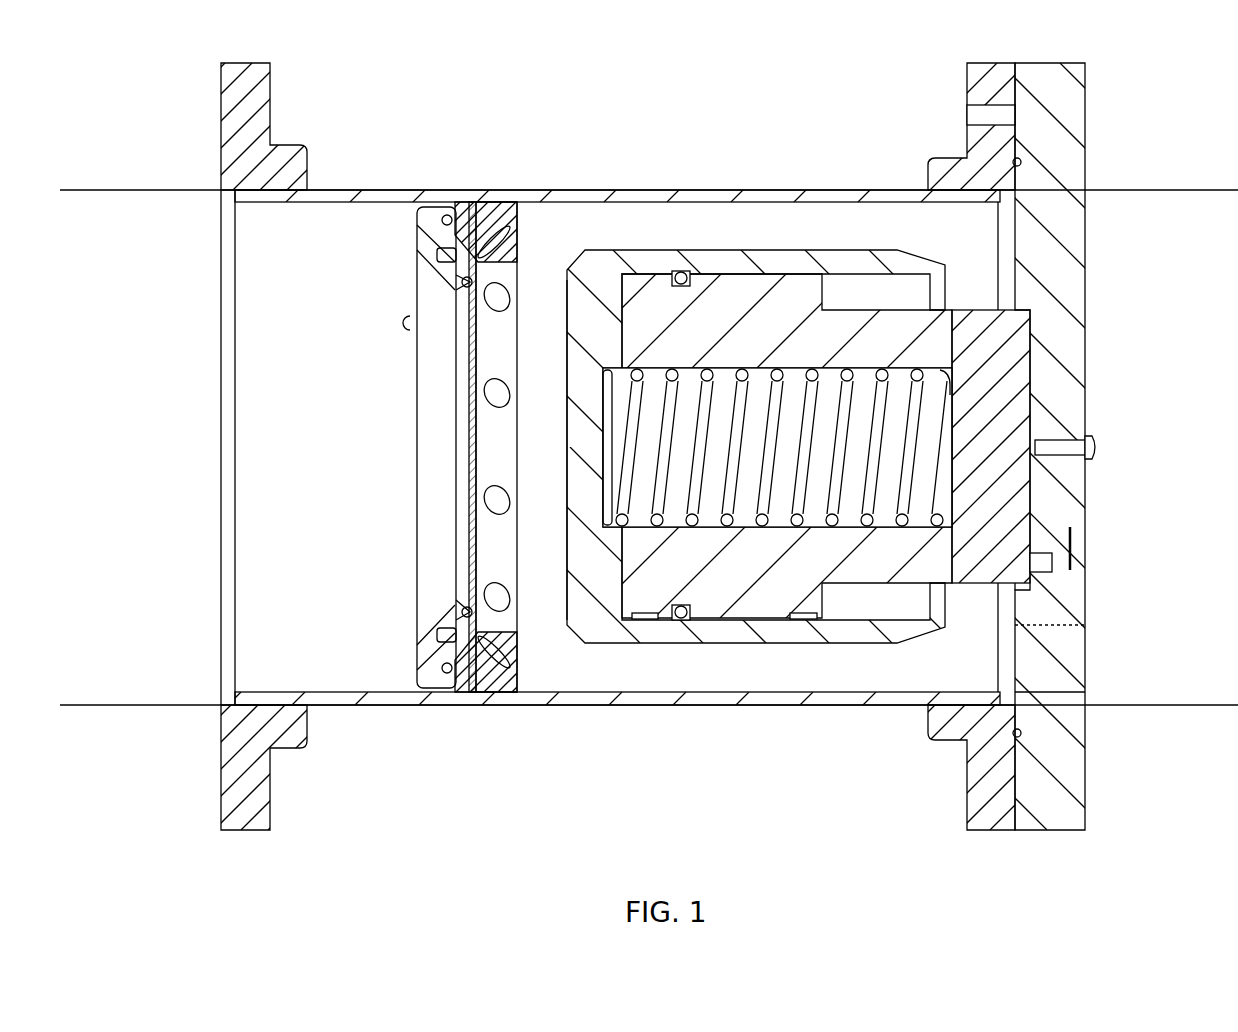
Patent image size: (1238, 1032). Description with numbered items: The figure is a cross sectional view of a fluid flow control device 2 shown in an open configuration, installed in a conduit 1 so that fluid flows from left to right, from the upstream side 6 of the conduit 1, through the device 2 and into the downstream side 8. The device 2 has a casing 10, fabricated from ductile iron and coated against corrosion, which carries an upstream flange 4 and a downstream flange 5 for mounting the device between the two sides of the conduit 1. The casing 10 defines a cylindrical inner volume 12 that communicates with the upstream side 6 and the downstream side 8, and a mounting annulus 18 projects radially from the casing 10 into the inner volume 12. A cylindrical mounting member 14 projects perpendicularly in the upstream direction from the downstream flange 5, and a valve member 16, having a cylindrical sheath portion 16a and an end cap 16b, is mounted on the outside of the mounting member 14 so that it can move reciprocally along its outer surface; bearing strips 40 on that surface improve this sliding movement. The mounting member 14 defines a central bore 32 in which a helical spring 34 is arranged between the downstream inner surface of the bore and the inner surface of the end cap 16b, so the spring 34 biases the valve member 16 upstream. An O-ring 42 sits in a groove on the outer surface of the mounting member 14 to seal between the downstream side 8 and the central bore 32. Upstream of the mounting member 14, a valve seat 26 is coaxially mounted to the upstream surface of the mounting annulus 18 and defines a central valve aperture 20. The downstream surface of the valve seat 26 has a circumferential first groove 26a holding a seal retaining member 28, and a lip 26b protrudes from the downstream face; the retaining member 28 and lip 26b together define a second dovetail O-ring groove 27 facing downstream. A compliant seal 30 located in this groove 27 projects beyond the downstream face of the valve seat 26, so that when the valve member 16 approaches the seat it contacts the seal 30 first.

The conduit 1 is at (140, 217).
The fluid flow control device 2 is at (390, 140).
The upstream flange 4 is at (258, 92).
The downstream flange 5 is at (977, 80).
The upstream side 6 is at (186, 467).
The downstream side 8 is at (1161, 467).
The casing 10 is at (622, 196).
The cylindrical inner volume 12 is at (705, 232).
The cylindrical mounting member 14 is at (975, 327).
The valve member 16 is at (605, 222).
The cylindrical sheath portion 16a is at (788, 262).
The end cap 16b is at (580, 305).
The mounting annulus 18 is at (493, 227).
The central valve aperture 20 is at (470, 533).
The valve seat 26 is at (420, 247).
The circumferential first groove 26a is at (468, 617).
The lip 26b is at (466, 606).
The second dovetail O-ring groove 27 is at (462, 283).
The seal retaining member 28 is at (443, 250).
The compliant seal 30 is at (470, 612).
The central bore 32 is at (853, 487).
The helical spring 34 is at (905, 480).
The bearing strips 40 is at (805, 622).
The O-ring 42 is at (683, 620).